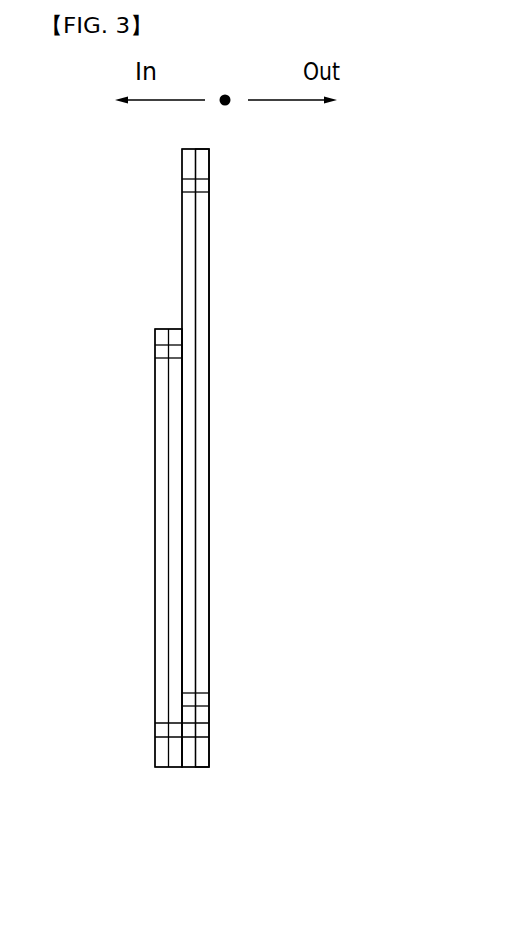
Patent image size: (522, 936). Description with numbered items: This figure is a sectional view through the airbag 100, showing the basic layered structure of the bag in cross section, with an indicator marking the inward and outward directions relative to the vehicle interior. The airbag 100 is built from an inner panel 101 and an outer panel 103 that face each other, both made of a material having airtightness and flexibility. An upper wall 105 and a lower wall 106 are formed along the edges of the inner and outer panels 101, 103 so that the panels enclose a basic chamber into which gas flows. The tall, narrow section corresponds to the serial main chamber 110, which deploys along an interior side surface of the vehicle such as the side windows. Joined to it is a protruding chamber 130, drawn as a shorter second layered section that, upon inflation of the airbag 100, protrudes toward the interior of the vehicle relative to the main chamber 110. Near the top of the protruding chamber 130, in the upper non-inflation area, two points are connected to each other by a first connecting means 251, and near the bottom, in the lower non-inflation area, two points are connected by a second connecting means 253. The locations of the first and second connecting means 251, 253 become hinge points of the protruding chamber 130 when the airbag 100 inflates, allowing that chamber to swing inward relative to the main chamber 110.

The airbag 100 is at (236, 338).
The inner panel 101 is at (182, 229).
The outer panel 103 is at (205, 223).
The upper wall 105 is at (203, 175).
The lower wall 106 is at (200, 692).
The main chamber 110 is at (200, 407).
The protruding chamber 130 is at (167, 518).
The first connecting means 251 is at (165, 343).
The second connecting means 253 is at (173, 737).